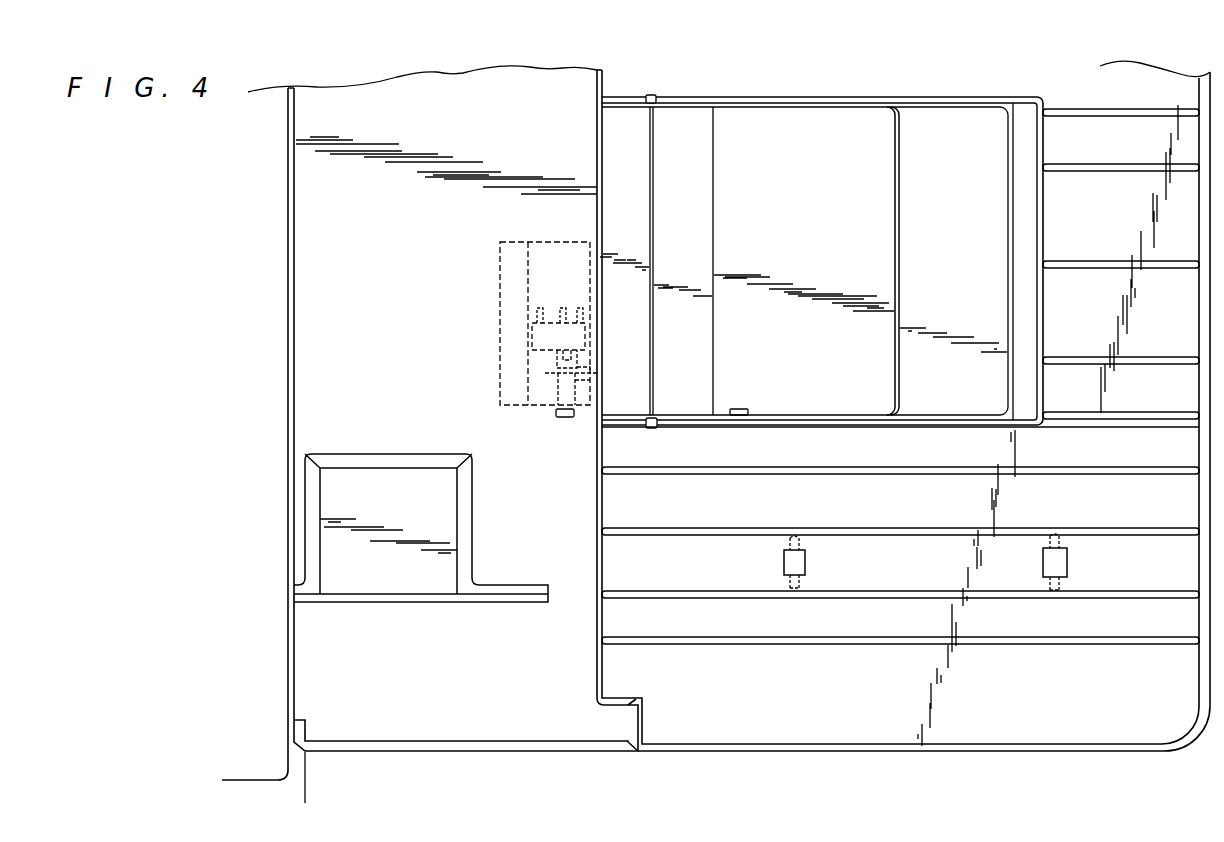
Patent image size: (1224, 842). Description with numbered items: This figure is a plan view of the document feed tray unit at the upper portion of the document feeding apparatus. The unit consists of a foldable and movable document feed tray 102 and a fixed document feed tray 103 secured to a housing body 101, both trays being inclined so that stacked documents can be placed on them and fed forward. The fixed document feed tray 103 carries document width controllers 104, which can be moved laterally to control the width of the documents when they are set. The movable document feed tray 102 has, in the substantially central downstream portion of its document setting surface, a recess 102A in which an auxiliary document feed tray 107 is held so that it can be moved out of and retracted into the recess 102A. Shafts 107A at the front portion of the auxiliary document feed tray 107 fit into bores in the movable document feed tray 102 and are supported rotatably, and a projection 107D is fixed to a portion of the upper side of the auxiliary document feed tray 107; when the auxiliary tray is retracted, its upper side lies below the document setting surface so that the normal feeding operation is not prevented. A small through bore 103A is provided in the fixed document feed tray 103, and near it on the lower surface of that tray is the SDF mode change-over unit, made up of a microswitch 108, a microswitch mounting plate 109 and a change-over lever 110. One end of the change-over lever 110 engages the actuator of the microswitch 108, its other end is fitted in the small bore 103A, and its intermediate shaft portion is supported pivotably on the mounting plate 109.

The housing body 101 is at (248, 780).
The movable document feed tray 102 is at (1090, 117).
The recess 102A is at (1023, 112).
The fixed document feed tray 103 is at (378, 90).
The small through bore 103A is at (556, 416).
The document width controllers 104 is at (330, 540).
The auxiliary document feed tray 107 is at (780, 108).
The shafts 107A is at (652, 95).
The projection 107D is at (742, 408).
The microswitch 108 is at (540, 337).
The microswitch mounting plate 109 is at (505, 282).
The change-over lever 110 is at (565, 392).